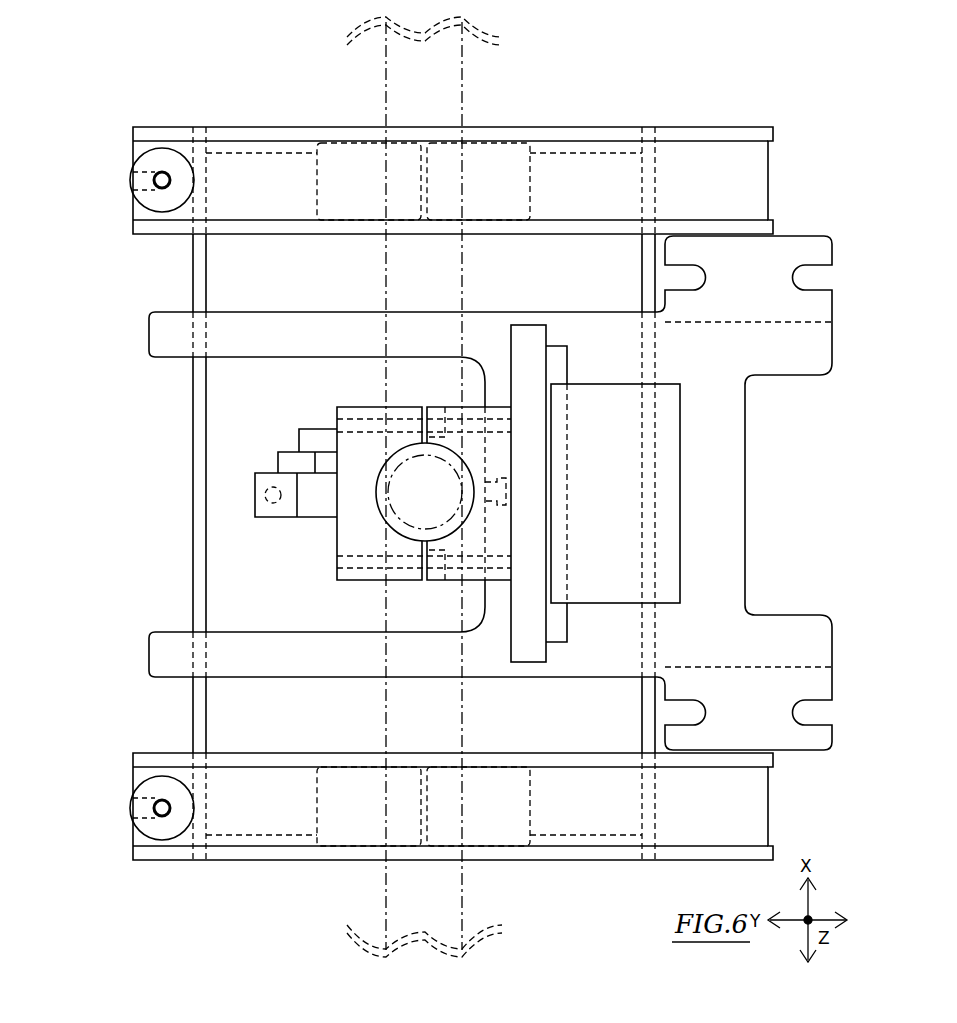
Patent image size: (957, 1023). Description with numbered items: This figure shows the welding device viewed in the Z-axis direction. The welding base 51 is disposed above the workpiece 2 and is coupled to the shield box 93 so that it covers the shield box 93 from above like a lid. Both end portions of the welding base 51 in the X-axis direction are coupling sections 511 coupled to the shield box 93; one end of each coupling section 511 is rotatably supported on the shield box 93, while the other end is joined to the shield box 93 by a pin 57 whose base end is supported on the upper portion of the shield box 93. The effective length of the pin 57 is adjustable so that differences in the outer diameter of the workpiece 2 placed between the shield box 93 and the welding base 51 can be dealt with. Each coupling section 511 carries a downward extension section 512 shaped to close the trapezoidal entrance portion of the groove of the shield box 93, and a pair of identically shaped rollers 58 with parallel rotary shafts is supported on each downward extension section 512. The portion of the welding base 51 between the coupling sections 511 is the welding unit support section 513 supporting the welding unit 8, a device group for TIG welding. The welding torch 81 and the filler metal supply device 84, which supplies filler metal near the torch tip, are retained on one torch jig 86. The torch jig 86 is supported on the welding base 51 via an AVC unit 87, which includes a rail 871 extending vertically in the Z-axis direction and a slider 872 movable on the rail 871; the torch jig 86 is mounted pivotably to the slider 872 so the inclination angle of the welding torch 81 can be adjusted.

The workpiece 2 is at (386, 903).
The welding unit 8 is at (769, 75).
The welding base 51 is at (148, 648).
The coupling sections 511 is at (171, 127).
The downward extension section 512 is at (510, 127).
The welding unit support section 513 is at (745, 426).
The pin 57 is at (130, 180).
The rollers 58 is at (313, 178).
The welding torch 81 is at (387, 447).
The filler metal supply device 84 is at (297, 517).
The torch jig 86 is at (337, 565).
The AVC unit 87 is at (712, 506).
The rail 871 is at (680, 588).
The slider 872 is at (511, 605).
The shield box 93 is at (192, 455).